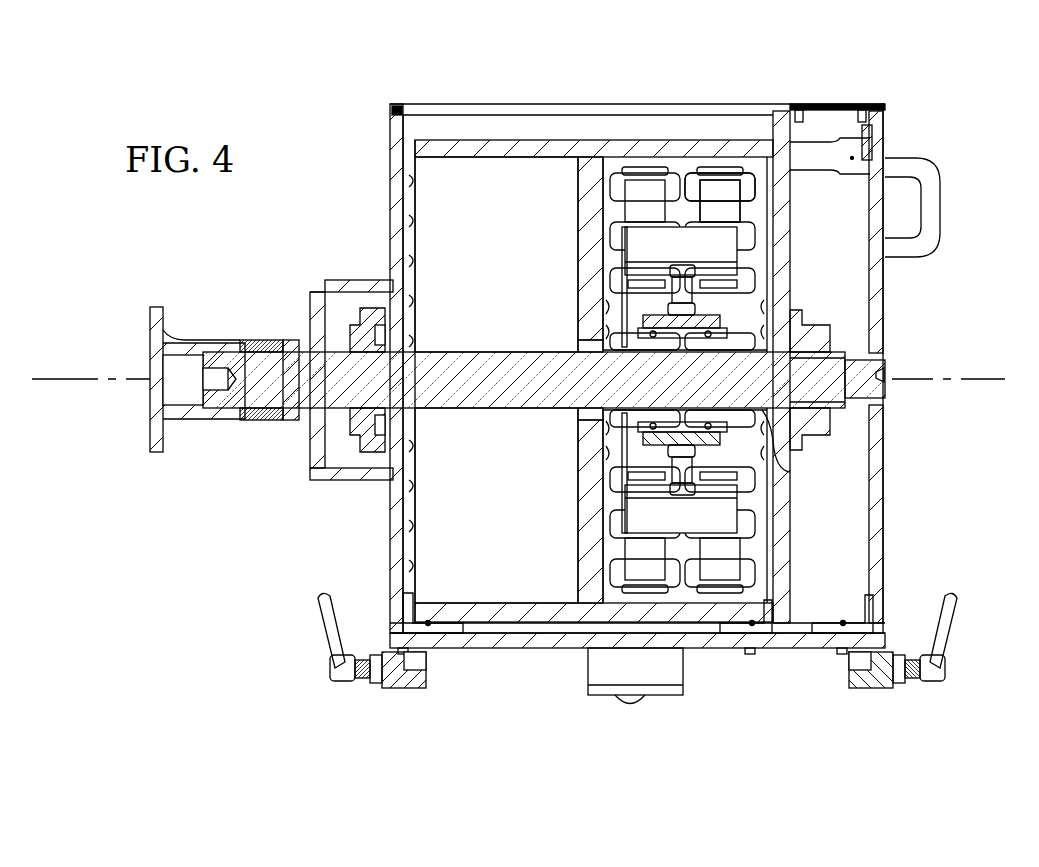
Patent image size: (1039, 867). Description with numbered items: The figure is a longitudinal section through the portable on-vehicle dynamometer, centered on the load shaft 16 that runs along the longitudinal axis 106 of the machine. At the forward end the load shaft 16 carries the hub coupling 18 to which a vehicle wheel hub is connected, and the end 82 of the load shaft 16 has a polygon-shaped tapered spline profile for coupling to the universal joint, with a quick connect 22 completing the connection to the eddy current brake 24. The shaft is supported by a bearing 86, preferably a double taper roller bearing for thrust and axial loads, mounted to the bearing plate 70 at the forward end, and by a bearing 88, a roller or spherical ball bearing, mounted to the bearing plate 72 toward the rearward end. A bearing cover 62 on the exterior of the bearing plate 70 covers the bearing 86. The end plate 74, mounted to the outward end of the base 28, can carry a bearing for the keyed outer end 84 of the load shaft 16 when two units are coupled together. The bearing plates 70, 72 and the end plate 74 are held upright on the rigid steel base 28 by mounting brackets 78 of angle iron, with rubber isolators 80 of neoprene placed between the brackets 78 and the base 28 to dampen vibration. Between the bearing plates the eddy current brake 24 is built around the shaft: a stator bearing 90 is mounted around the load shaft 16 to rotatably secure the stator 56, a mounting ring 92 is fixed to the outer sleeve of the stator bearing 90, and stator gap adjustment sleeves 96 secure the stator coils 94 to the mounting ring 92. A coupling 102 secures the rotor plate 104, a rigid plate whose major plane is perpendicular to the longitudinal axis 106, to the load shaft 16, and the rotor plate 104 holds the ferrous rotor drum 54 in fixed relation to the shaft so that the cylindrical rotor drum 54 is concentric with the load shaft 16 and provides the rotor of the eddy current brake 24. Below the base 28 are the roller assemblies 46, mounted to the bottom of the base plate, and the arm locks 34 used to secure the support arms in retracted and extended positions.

The eddy current brake 24 is at (626, 58).
The load shaft 16 is at (482, 352).
The hub coupling 18 is at (153, 307).
The quick connect 22 is at (286, 345).
The base 28 is at (531, 648).
The arm locks 34 is at (320, 640).
The roller assemblies 46 is at (668, 697).
The rotor drum 54 is at (612, 138).
The stator 56 is at (680, 155).
The bearing cover 62 is at (346, 278).
The bearing plate 70 is at (390, 130).
The bearing plate 72 is at (790, 520).
The end plate 74 is at (885, 495).
The mounting brackets 78 is at (420, 600).
The rubber isolators 80 is at (392, 632).
The end of the load shaft 82 is at (216, 393).
The outer end of the load shaft 84 is at (884, 366).
The bearing 86 is at (368, 430).
The bearing 88 is at (818, 325).
The stator bearing 90 is at (790, 472).
The mounting ring 92 is at (640, 325).
The stator coils 94 is at (722, 185).
The stator gap adjustment sleeves 96 is at (612, 470).
The coupling 102 is at (578, 415).
The rotor plate 104 is at (578, 222).
The longitudinal axis 106 is at (945, 380).